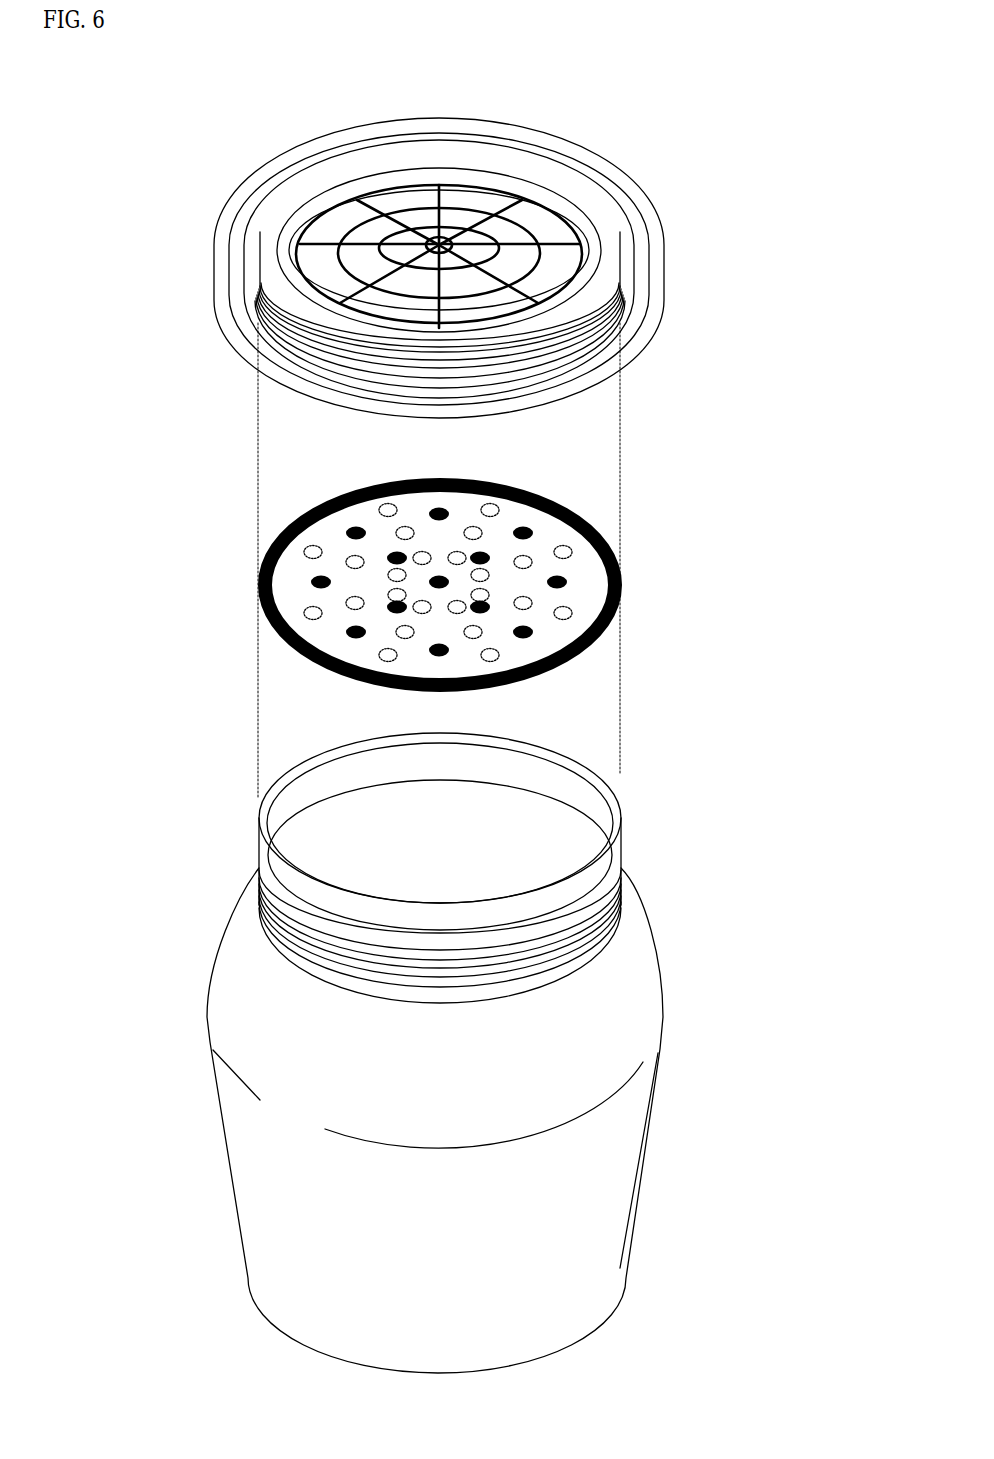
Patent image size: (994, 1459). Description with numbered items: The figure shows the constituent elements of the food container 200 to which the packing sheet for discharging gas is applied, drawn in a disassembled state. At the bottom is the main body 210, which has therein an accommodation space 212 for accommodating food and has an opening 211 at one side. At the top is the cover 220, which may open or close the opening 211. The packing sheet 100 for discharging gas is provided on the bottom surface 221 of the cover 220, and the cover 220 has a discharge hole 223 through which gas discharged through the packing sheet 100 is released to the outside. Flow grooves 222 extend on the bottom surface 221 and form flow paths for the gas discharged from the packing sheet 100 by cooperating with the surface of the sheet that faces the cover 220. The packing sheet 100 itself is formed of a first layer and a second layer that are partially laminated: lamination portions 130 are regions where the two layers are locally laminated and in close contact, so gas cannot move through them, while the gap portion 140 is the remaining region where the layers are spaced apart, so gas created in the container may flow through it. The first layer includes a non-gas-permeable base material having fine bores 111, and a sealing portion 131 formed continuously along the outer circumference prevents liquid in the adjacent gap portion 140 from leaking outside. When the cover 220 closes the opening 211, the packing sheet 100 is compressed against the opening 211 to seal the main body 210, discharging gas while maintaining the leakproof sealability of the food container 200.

The food container 200 is at (237, 90).
The cover 220 is at (598, 142).
The bottom surface 221 is at (324, 268).
The flow grooves 222 is at (622, 319).
The discharge hole 223 is at (593, 222).
The packing sheet for discharging gas 100 is at (304, 506).
The sealing portion 131 is at (576, 517).
The gap portion 140 is at (583, 584).
The lamination portions 130 is at (353, 637).
The fine bores 111 is at (310, 615).
The main body 210 is at (672, 950).
The opening 211 is at (567, 802).
The accommodation space 212 is at (358, 844).